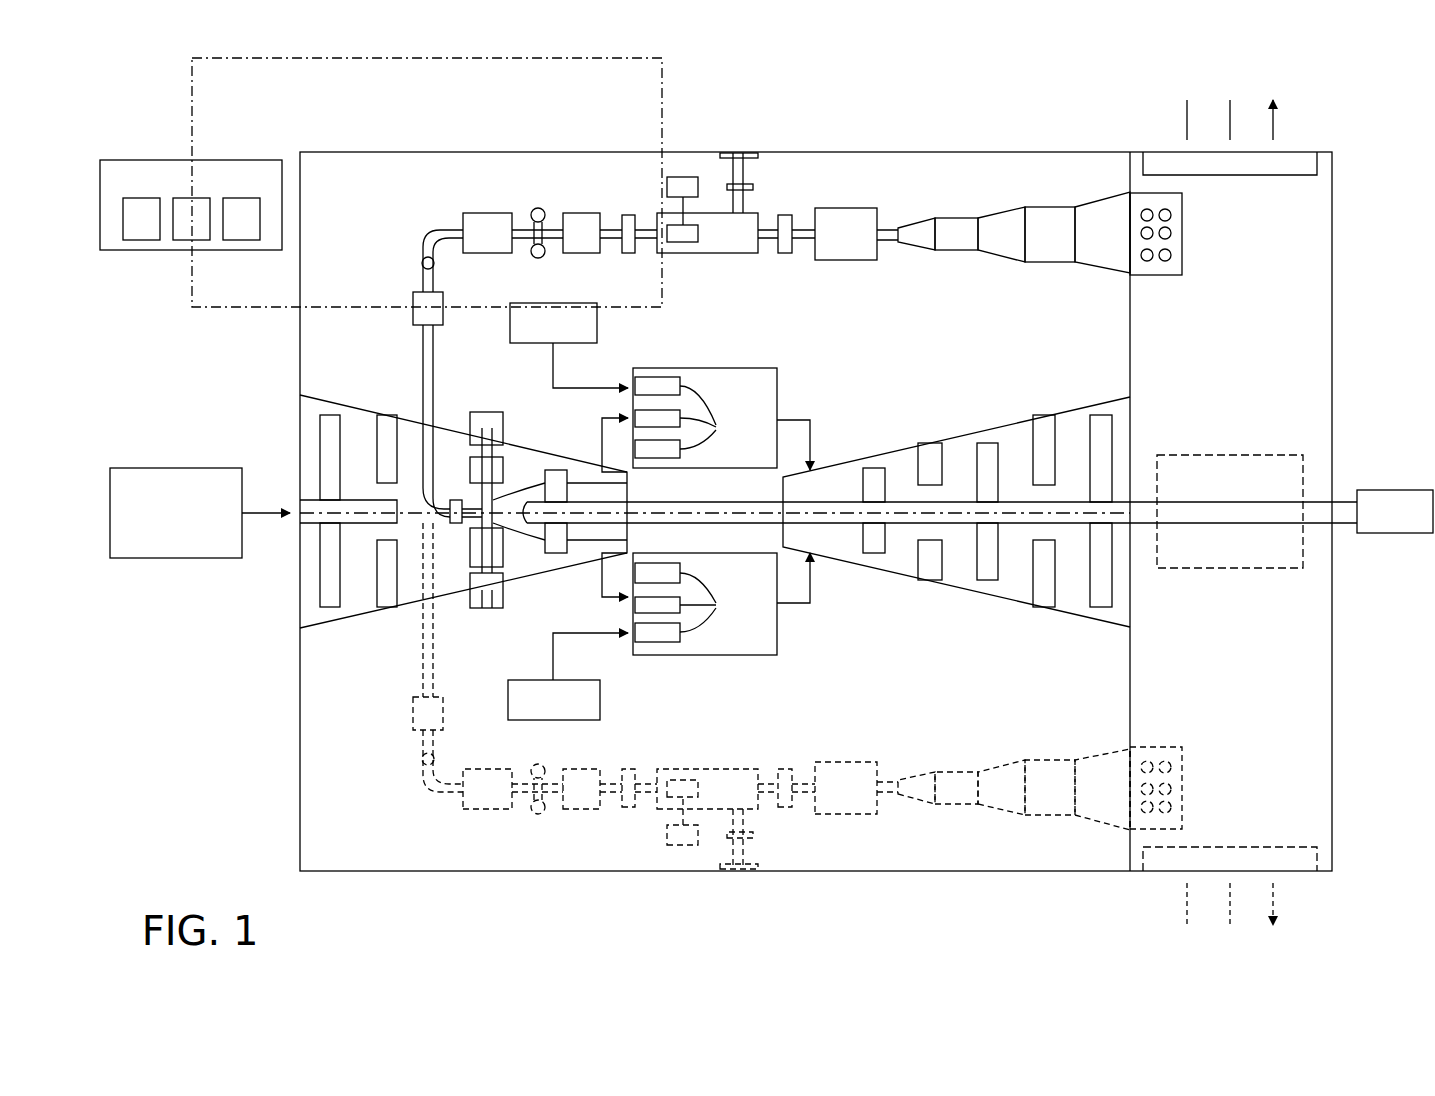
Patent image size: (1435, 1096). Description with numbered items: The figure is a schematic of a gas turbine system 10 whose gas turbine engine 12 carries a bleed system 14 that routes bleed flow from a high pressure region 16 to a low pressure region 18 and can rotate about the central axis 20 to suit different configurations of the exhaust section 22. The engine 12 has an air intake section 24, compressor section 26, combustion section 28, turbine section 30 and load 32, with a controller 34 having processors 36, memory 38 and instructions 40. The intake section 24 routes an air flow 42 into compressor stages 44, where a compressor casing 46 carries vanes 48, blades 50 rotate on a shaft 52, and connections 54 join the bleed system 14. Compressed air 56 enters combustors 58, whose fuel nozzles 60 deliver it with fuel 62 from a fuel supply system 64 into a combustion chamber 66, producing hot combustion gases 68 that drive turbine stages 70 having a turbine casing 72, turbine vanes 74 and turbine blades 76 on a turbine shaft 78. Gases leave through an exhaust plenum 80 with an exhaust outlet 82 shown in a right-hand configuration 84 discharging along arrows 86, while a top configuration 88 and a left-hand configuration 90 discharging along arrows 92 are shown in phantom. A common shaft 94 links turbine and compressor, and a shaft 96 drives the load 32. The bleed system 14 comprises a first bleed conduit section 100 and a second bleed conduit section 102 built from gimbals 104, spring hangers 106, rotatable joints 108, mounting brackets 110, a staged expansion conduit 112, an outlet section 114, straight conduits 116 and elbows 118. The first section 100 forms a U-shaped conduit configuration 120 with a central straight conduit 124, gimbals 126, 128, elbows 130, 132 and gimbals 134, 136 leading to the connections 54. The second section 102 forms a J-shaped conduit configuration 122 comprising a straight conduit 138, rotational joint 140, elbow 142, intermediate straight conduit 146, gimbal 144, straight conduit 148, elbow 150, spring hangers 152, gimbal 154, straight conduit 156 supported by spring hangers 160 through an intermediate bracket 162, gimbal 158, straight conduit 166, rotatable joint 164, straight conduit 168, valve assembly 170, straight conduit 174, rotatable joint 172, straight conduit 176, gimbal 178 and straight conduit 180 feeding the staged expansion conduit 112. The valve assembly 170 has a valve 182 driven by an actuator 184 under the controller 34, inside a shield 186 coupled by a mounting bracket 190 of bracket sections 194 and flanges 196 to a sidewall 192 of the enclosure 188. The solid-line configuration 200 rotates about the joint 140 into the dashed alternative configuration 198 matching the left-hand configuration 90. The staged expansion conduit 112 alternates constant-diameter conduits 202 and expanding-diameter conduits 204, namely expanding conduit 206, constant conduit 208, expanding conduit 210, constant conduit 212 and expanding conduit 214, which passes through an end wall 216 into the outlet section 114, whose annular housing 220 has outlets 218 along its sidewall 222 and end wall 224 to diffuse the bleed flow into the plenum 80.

The gas turbine system 10 is at (945, 60).
The gas turbine engine 12 is at (207, 660).
The bleed system 14 is at (415, 175).
The high pressure region 16 is at (190, 588).
The low pressure region 18 is at (1290, 350).
The central axis 20 is at (330, 513).
The exhaust section 22 is at (1355, 852).
The air intake section 24 is at (176, 468).
The compressor section 26 is at (200, 618).
The combustion section 28 is at (760, 683).
The turbine section 30 is at (1137, 598).
The load 32 is at (1395, 490).
The controller 34 is at (165, 160).
The processor 36 is at (150, 252).
The memory 38 is at (190, 252).
The instructions 40 is at (245, 252).
The air flow 42 is at (300, 516).
The compressor stage 44 is at (248, 660).
The compressor casing 46 is at (333, 610).
The vane 48 is at (377, 578).
The blade 50 is at (332, 598).
The shaft 52 is at (300, 522).
The connection 54 is at (503, 443).
The compressed air flow 56 is at (628, 416).
The combustor 58 is at (777, 393).
The fuel nozzle 60 is at (695, 509).
The fuel 62 is at (567, 383).
The fuel supply system 64 is at (530, 345).
The combustion chamber 66 is at (752, 450).
The hot combustion gases 68 is at (812, 432).
The turbine stage 70 is at (940, 405).
The turbine casing 72 is at (1087, 623).
The turbine vane 74 is at (932, 585).
The turbine blade 76 is at (987, 575).
The turbine shaft 78 is at (1118, 500).
The exhaust plenum 80 is at (1333, 830).
The exhaust outlet 82 is at (1317, 160).
The right-hand configuration 84 is at (1318, 190).
The arrows 86 is at (1275, 120).
The top configuration 88 is at (1307, 560).
The left-hand configuration 90 is at (1333, 890).
The arrows 92 is at (1188, 898).
The common shaft 94 is at (700, 525).
The shaft 96 is at (1195, 520).
The first bleed conduit section 100 is at (487, 645).
The second bleed conduit section 102 is at (372, 172).
The gimbal 104 is at (478, 168).
The spring hanger 106 is at (547, 157).
The rotatable joint 108 is at (593, 137).
The mounting bracket 110 is at (787, 76).
The staged expansion conduit 112 is at (972, 128).
The outlet section 114 is at (1250, 262).
The straight conduit 116 is at (782, 197).
The bending conduit or elbow 118 is at (430, 198).
The U-shaped conduit configuration 120 is at (500, 612).
The J-shaped conduit configuration 122 is at (347, 173).
The central straight conduit 124 is at (627, 483).
The gimbal 126 is at (627, 542).
The gimbal 128 is at (505, 470).
The bending conduit or elbow 130 is at (473, 578).
The bending conduit or elbow 132 is at (468, 440).
The gimbal 134 is at (503, 597).
The gimbal 136 is at (505, 443).
The straight conduit 138 is at (395, 607).
The rotational joint 140 is at (453, 500).
The bending conduit or elbow 142 is at (450, 507).
The gimbal 144 is at (413, 318).
The intermediate straight conduit 146 is at (433, 417).
The straight conduit 148 is at (422, 280).
The bending conduit or elbow 150 is at (430, 235).
The spring hanger 152 is at (421, 264).
The gimbal 154 is at (472, 255).
The straight conduit 156 is at (527, 227).
The gimbal 158 is at (566, 213).
The spring hangers 160 is at (538, 208).
The intermediate bracket 162 is at (533, 238).
The rotatable joint 164 is at (628, 255).
The straight conduit 166 is at (623, 225).
The straight conduit 168 is at (650, 230).
The valve assembly 170 is at (722, 255).
The rotatable joint 172 is at (787, 250).
The straight conduit 174 is at (763, 245).
The straight conduit 176 is at (803, 242).
The gimbal 178 is at (843, 262).
The straight conduit 180 is at (887, 230).
The valve 182 is at (712, 255).
The actuator 184 is at (683, 177).
The wall structure 186 is at (728, 255).
The enclosure 188 is at (908, 873).
The mounting bracket 190 is at (741, 150).
The sidewall 192 is at (815, 873).
The bracket section 194 is at (733, 190).
The intermediate flange 196 is at (755, 187).
The alternative configuration 198 is at (405, 818).
The bleed conduit configuration 200 is at (347, 273).
The constant-diameter conduit 202 is at (942, 213).
The expanding-diameter conduit 204 is at (1005, 158).
The expanding conduit 206 is at (918, 246).
The constant conduit 208 is at (957, 252).
The expanding conduit 210 is at (995, 255).
The constant conduit 212 is at (1040, 263).
The expanding conduit 214 is at (1097, 268).
The end wall 216 is at (1130, 332).
The outlet 218 is at (1147, 262).
The annular housing 220 is at (1182, 208).
The sidewall 222 is at (1130, 200).
The end wall 224 is at (1182, 240).